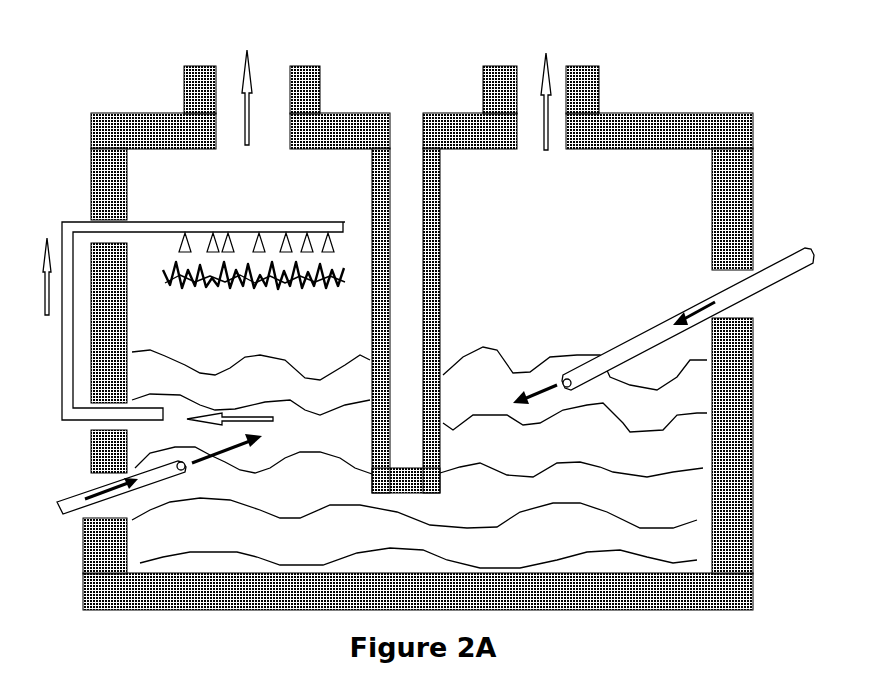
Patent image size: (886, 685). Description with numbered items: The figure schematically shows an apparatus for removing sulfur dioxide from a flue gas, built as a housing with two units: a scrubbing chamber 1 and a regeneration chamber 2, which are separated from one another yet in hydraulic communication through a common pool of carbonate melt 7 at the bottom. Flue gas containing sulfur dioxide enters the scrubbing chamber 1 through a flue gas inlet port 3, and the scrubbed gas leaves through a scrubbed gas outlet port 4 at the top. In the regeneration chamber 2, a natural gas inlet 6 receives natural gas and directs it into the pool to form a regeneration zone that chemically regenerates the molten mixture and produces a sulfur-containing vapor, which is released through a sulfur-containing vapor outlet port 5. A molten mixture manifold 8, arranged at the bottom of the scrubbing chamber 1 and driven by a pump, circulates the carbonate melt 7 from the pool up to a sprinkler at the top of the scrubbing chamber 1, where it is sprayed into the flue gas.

The scrubbing chamber 1 is at (251, 370).
The regeneration chamber 2 is at (575, 363).
The flue gas inlet port 3 is at (152, 503).
The scrubbed gas outlet port 4 is at (265, 87).
The sulfur-containing vapor outlet port 5 is at (571, 89).
The natural gas inlet 6 is at (668, 293).
The carbonate melt 7 is at (417, 507).
The molten mixture manifold 8 is at (187, 321).